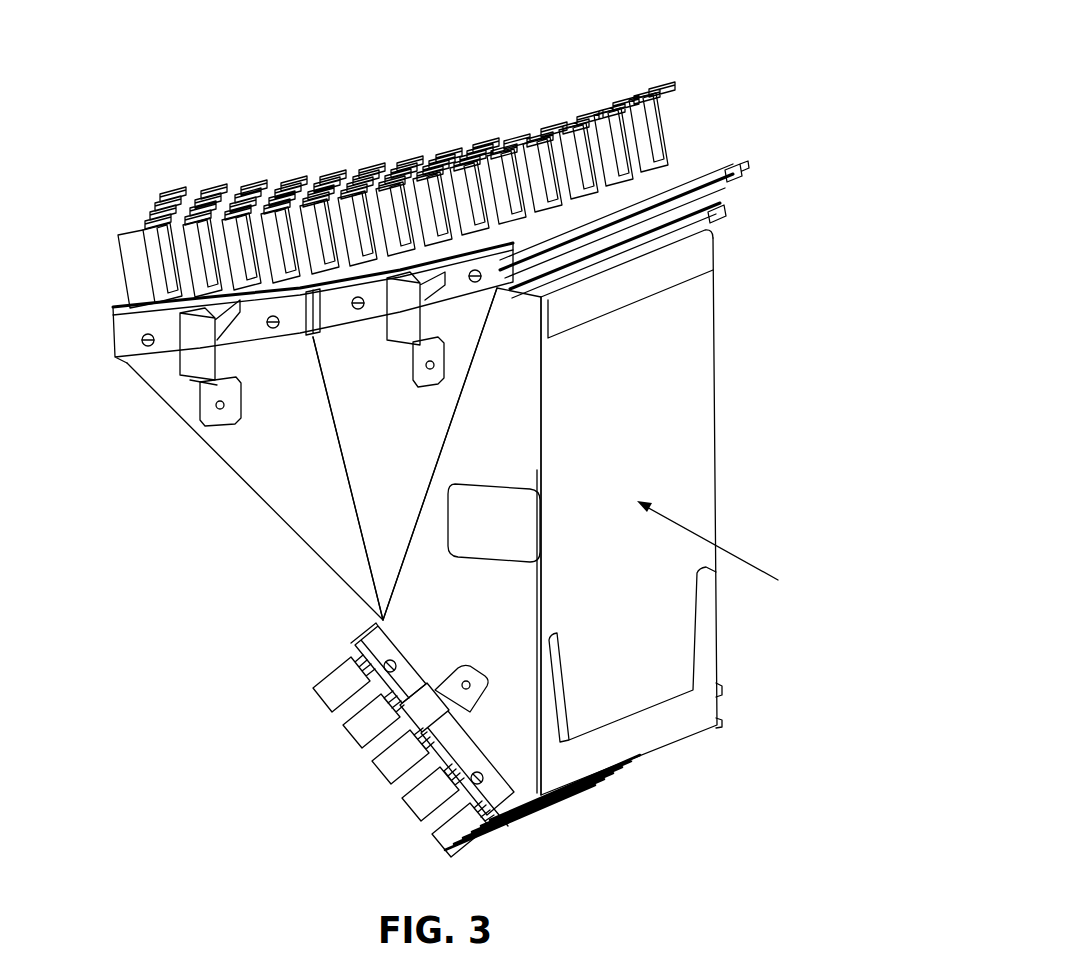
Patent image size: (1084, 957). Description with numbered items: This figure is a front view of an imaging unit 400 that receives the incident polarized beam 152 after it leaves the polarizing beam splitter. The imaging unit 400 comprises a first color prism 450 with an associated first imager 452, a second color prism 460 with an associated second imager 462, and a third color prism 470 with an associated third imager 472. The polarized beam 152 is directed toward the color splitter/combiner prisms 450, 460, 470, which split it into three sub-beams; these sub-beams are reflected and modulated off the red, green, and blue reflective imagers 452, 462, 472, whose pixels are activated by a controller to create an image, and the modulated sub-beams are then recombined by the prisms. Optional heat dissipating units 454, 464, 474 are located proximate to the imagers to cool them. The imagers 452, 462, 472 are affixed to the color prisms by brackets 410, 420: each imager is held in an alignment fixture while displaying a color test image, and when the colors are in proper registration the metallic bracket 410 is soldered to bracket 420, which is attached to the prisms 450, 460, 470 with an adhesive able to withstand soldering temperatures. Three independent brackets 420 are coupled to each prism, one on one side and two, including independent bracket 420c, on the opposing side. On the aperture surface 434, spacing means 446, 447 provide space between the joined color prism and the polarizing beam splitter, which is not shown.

The imaging unit 400 is at (640, 55).
The heat dissipating unit 464 is at (546, 122).
The heat dissipating unit 474 is at (175, 235).
The second imager 462 is at (697, 193).
The means of spacing 446 is at (688, 262).
The aperture surface 434 is at (673, 378).
The polarized beam 152 is at (735, 556).
The means of spacing 447 is at (680, 742).
The bracket 410 is at (190, 358).
The bracket 420 is at (433, 378).
The independent bracket 420c is at (213, 420).
The first color prism 450 is at (475, 629).
The second color prism 460 is at (411, 464).
The third color prism 470 is at (312, 464).
The third imager 472 is at (127, 340).
The heat dissipating unit 454 is at (388, 772).
The first imager 452 is at (498, 823).